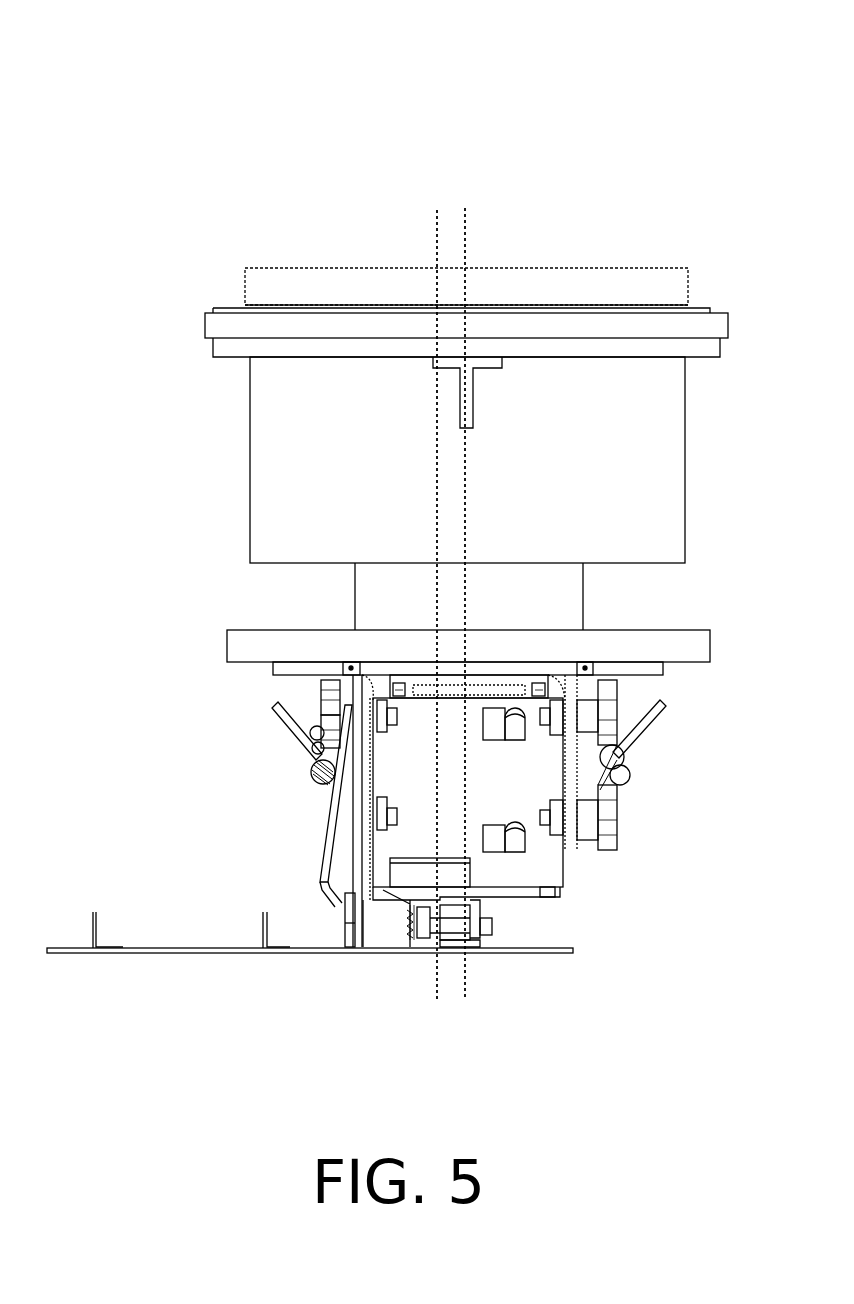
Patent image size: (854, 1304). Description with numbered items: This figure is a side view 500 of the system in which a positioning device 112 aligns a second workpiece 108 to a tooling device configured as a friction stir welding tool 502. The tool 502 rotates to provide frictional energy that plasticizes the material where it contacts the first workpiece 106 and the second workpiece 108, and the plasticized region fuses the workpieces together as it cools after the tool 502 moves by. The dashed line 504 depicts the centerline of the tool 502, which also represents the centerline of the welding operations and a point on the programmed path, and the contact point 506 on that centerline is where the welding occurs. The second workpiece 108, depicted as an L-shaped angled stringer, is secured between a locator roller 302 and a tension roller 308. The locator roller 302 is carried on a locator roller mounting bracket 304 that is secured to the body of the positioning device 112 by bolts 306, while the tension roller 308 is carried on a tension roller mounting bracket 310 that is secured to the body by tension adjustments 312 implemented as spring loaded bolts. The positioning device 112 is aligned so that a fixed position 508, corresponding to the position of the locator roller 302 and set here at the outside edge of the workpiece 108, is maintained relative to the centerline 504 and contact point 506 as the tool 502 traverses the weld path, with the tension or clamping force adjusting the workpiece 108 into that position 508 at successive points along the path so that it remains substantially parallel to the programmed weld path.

The rotary coupling assembly 500 is at (641, 90).
The friction stir welding (FSW) tool 502 is at (612, 266).
The centerline 504 is at (465, 203).
The fixed position 508 is at (437, 213).
The positioning device 112 is at (353, 722).
The tension adjustments 312 is at (457, 885).
The tension roller mounting bracket 310 is at (403, 877).
The bolts 306 is at (345, 930).
The locator roller mounting bracket 304 is at (388, 925).
The locator roller 302 is at (432, 928).
The tension roller 308 is at (452, 928).
The contact point 506 is at (485, 925).
The first workpiece 106 is at (538, 952).
The second workpiece 108 is at (458, 942).